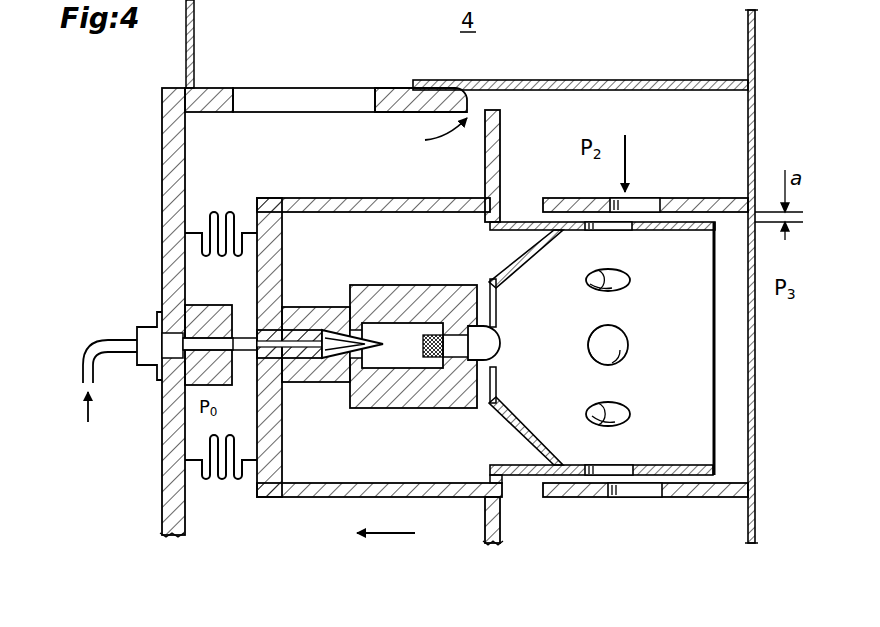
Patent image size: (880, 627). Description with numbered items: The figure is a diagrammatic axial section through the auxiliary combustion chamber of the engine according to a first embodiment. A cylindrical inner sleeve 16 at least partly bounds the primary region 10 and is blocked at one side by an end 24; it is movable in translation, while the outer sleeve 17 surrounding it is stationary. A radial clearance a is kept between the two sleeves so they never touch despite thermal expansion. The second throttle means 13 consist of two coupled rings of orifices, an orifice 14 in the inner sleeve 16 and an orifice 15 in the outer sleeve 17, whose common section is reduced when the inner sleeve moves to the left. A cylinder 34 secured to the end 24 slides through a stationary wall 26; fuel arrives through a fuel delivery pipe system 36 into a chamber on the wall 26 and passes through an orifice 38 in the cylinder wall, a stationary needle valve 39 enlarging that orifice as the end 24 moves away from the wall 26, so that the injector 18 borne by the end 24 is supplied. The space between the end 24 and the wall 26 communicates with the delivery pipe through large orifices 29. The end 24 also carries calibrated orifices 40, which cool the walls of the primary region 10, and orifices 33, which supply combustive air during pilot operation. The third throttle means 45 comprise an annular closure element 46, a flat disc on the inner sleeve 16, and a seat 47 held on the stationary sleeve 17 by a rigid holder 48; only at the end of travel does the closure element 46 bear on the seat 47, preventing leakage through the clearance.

The primary region 10 is at (699, 361).
The second throttle means 13 is at (634, 192).
The orifice 14 is at (622, 232).
The orifice 15 is at (640, 197).
The inner sleeve 16 is at (693, 232).
The outer sleeve 17 is at (703, 197).
The injector 18 is at (500, 343).
The end 24 is at (522, 247).
The stationary wall 26 is at (182, 161).
The orifices 29 is at (352, 104).
The calibrated orifices 33 is at (478, 284).
The cylinder 34 is at (388, 284).
The fuel delivery pipe system 36 is at (92, 358).
The orifice 38 is at (380, 360).
The stationary needle valve 39 is at (347, 334).
The calibrated orifices 40 is at (520, 263).
The third throttle means 45 is at (432, 133).
The annular closure element 46 is at (500, 157).
The seat 47 is at (481, 88).
The rigid holder 48 is at (680, 82).